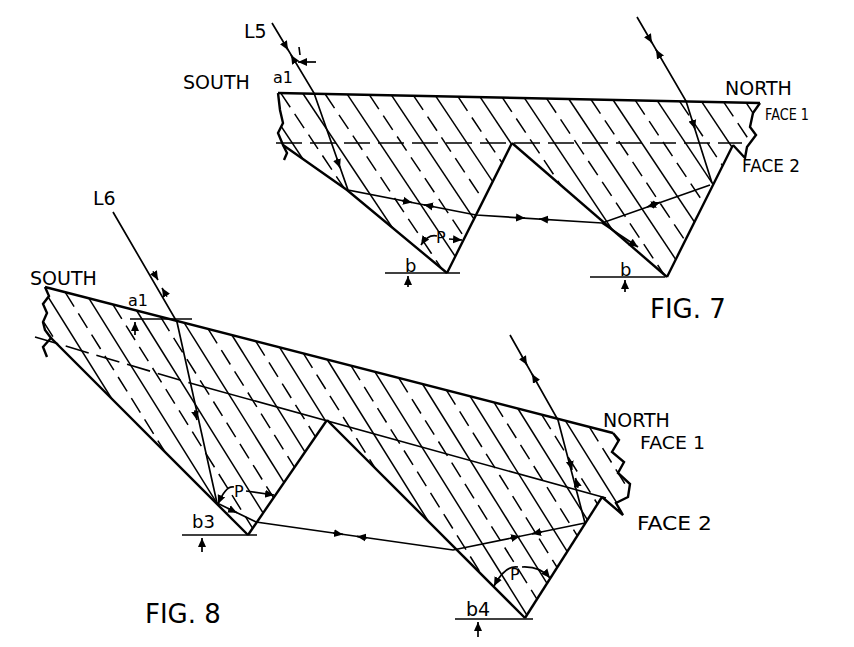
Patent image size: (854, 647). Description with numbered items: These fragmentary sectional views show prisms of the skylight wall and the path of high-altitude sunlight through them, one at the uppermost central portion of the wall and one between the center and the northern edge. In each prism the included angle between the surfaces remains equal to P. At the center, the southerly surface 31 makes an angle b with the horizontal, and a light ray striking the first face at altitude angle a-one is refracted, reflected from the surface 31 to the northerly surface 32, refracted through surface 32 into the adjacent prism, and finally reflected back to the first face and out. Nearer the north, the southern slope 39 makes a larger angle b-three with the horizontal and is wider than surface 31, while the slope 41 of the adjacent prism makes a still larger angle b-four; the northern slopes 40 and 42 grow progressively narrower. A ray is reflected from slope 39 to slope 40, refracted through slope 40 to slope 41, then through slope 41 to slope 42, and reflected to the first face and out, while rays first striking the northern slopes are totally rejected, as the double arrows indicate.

In FIG. 7, the southerly surface 31 is at (368, 208).
In FIG. 7, the northerly surface 32 is at (471, 214).
In FIG. 8, the southern slope 39 is at (166, 452).
In FIG. 8, the northern slope 40 is at (289, 475).
In FIG. 8, the southern slope 41 is at (397, 489).
In FIG. 8, the northern slope 42 is at (567, 553).